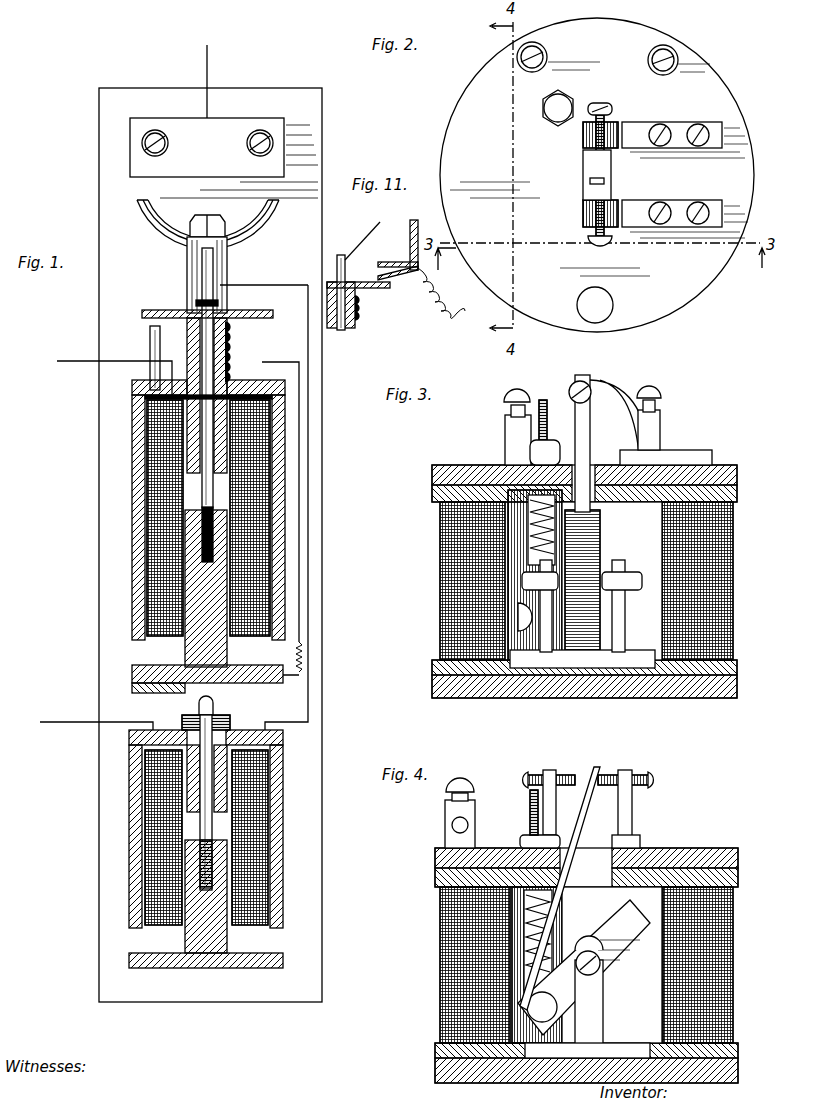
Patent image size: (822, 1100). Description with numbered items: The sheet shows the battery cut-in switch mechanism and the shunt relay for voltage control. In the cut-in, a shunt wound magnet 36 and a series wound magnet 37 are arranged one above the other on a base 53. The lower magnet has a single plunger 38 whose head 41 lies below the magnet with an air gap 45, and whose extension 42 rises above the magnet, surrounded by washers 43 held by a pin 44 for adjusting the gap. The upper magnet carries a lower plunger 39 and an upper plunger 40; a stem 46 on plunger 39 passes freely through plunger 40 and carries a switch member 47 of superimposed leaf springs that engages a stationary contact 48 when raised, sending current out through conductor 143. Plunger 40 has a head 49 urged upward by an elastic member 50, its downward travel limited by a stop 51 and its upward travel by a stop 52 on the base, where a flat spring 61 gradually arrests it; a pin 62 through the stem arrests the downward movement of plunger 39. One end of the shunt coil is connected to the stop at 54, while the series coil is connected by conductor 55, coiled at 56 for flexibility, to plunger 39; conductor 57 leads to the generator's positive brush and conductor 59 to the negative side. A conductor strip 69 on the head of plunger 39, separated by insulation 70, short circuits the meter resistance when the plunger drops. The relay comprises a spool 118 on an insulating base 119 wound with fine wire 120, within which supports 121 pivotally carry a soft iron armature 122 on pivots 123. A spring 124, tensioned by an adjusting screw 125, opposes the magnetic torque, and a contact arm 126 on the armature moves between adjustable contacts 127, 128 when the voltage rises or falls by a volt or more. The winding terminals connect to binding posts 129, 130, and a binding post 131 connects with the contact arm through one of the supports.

In FIG. 1, the shunt wound magnet 36 is at (128, 822).
In FIG. 1, the series wound magnet 37 is at (148, 518).
In FIG. 1, the plunger 38 is at (200, 934).
In FIG. 1, the lower plunger 39 is at (200, 580).
In FIG. 1, the upper plunger 40 is at (160, 412).
In FIG. 11, the upper plunger 40 is at (352, 328).
In FIG. 1, the head 41 is at (274, 968).
In FIG. 1, the extension 42 is at (200, 780).
In FIG. 1, the washers 43 is at (232, 724).
In FIG. 1, the pin 44 is at (216, 712).
In FIG. 1, the air gap 45 is at (282, 940).
In FIG. 1, the stem 46 is at (175, 486).
In FIG. 11, the stem 46 is at (369, 232).
In FIG. 1, the switch member 47 is at (272, 214).
In FIG. 1, the stationary contact 48 is at (230, 127).
In FIG. 1, the head 49 is at (166, 314).
In FIG. 1, the elastic member 50 is at (236, 352).
In FIG. 11, the elastic member 50 is at (362, 320).
In FIG. 1, the stop 51 is at (150, 339).
In FIG. 1, the stop 52 is at (196, 279).
In FIG. 11, the stop 52 is at (396, 258).
In FIG. 1, the base 53 is at (320, 258).
In FIG. 11, the base 53 is at (341, 292).
In FIG. 1, the connection 54 is at (309, 375).
In FIG. 11, the connection 54 is at (441, 296).
In FIG. 1, the conductor 55 is at (300, 480).
In FIG. 1, the coil 56 is at (297, 656).
In FIG. 1, the conductor 57 is at (71, 360).
In FIG. 1, the conductor 59 is at (72, 732).
In FIG. 1, the flat spring 61 is at (220, 308).
In FIG. 11, the flat spring 61 is at (404, 276).
In FIG. 1, the pin 62 is at (212, 296).
In FIG. 11, the pin 62 is at (346, 282).
In FIG. 1, the conductor strip 69 is at (152, 693).
In FIG. 1, the insulation 70 is at (132, 680).
In FIG. 1, the conductor 143 is at (206, 72).
In FIG. 3, the spool 118 is at (655, 560).
In FIG. 4, the spool 118 is at (660, 1000).
In FIG. 3, the insulating base 119 is at (712, 698).
In FIG. 4, the insulating base 119 is at (736, 1066).
In FIG. 3, the fine wire 120 is at (722, 638).
In FIG. 4, the fine wire 120 is at (725, 1020).
In FIG. 3, the supports 121 is at (600, 656).
In FIG. 4, the supports 121 is at (602, 1024).
In FIG. 3, the armature 122 is at (600, 540).
In FIG. 4, the armature 122 is at (622, 935).
In FIG. 3, the pivots 123 is at (522, 580).
In FIG. 4, the pivots 123 is at (596, 972).
In FIG. 3, the spring 124 is at (540, 515).
In FIG. 4, the spring 124 is at (530, 912).
In FIG. 2, the adjusting screw 125 is at (558, 112).
In FIG. 3, the adjusting screw 125 is at (545, 400).
In FIG. 4, the adjusting screw 125 is at (530, 808).
In FIG. 2, the contact arm 126 is at (606, 182).
In FIG. 3, the contact arm 126 is at (598, 412).
In FIG. 4, the contact arm 126 is at (592, 840).
In FIG. 2, the adjustable contact 127 is at (606, 118).
In FIG. 4, the adjustable contact 127 is at (552, 776).
In FIG. 2, the adjustable contact 128 is at (596, 228).
In FIG. 3, the adjustable contact 128 is at (590, 382).
In FIG. 4, the adjustable contact 128 is at (625, 776).
In FIG. 2, the binding post 129 is at (522, 65).
In FIG. 3, the binding post 129 is at (508, 432).
In FIG. 4, the binding post 129 is at (452, 812).
In FIG. 2, the binding post 130 is at (678, 64).
In FIG. 3, the binding post 130 is at (662, 432).
In FIG. 2, the binding post 131 is at (614, 308).